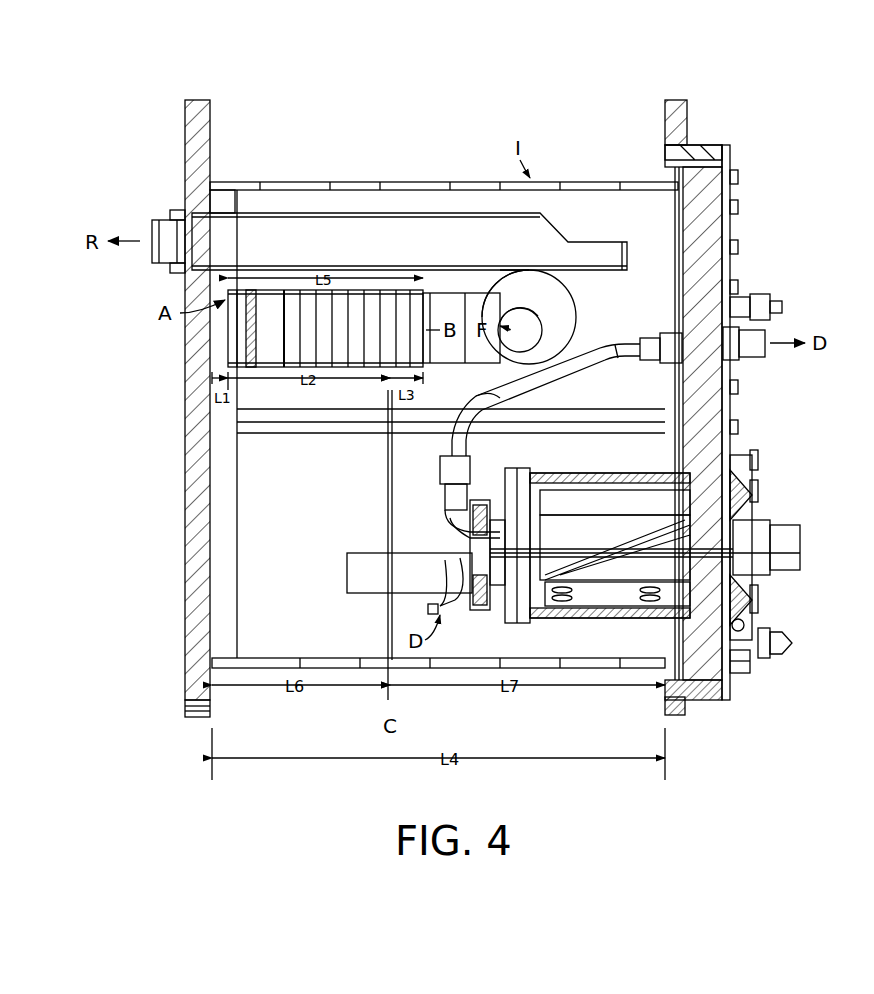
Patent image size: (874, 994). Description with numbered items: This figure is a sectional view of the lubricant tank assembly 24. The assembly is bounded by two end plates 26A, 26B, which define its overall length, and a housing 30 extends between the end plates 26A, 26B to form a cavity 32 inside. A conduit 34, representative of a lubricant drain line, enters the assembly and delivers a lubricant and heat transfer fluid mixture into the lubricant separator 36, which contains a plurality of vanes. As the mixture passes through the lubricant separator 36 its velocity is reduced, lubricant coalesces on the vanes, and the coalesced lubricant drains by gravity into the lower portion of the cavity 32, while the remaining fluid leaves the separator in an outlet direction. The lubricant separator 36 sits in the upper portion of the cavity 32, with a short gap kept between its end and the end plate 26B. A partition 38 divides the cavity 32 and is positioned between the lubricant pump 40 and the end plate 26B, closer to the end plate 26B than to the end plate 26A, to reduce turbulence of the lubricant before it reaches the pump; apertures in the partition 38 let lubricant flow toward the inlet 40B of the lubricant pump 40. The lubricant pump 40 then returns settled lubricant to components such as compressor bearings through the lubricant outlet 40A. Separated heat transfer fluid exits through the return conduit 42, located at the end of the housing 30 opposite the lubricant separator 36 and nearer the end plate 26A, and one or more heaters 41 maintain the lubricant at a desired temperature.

The lubricant tank assembly 24 is at (560, 90).
The end plate 26A is at (678, 98).
The end plate 26B is at (200, 98).
The housing 30 is at (345, 180).
The cavity 32 is at (670, 240).
The conduit 34 is at (565, 300).
The lubricant separator 36 is at (225, 340).
The partition 38 is at (388, 490).
The lubricant pump 40 is at (542, 614).
The lubricant outlet 40A is at (760, 360).
The inlet 40B is at (460, 600).
The heater 41 is at (362, 594).
The return conduit 42 is at (389, 231).